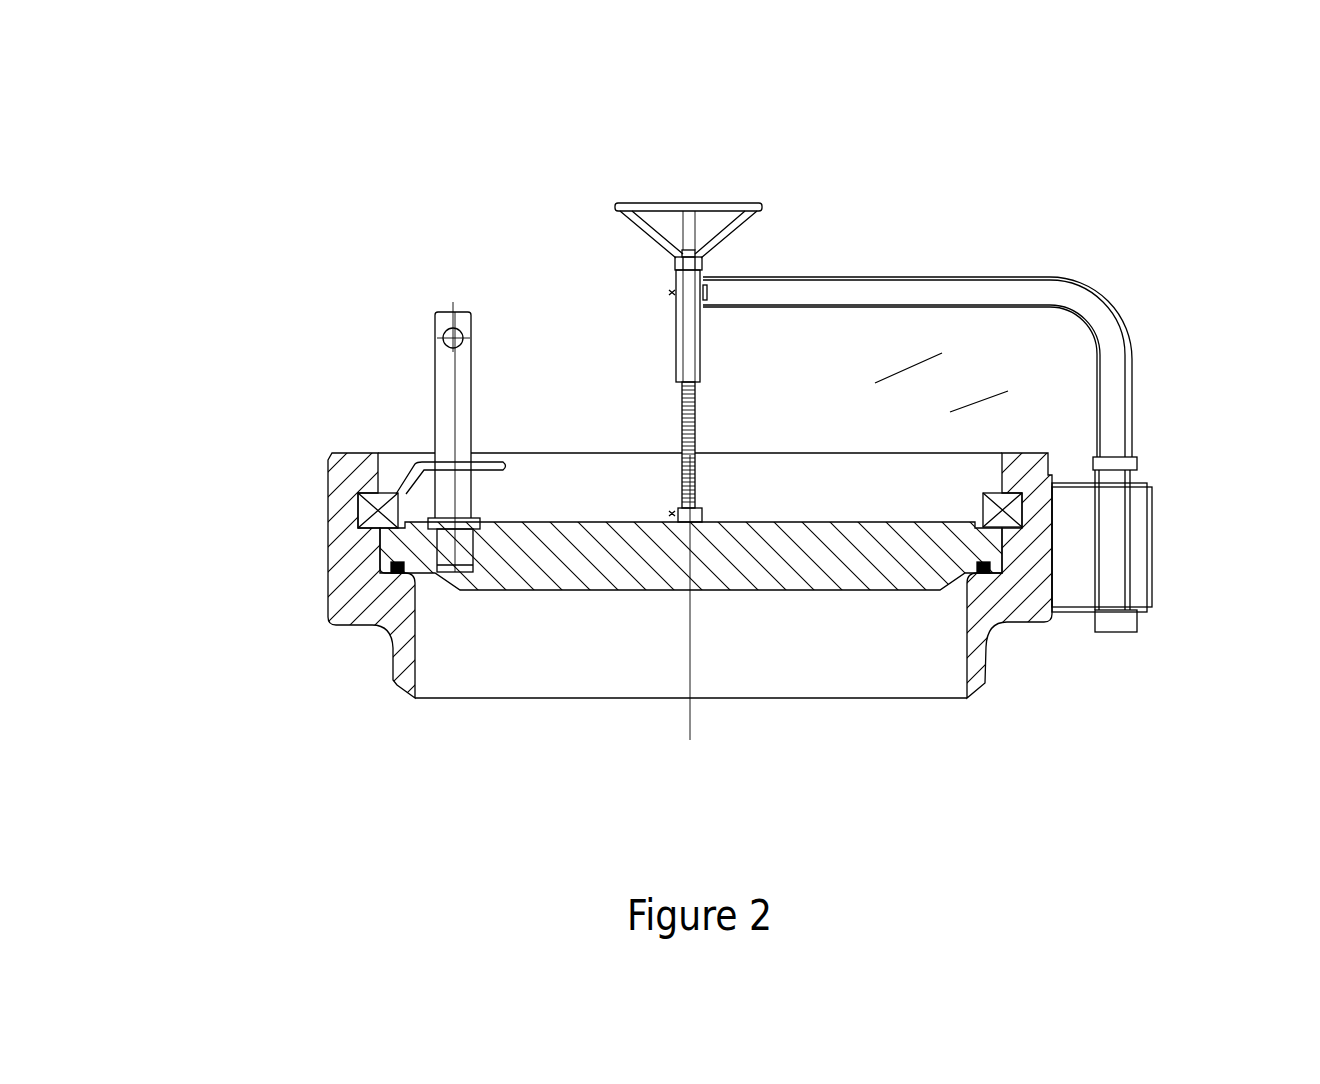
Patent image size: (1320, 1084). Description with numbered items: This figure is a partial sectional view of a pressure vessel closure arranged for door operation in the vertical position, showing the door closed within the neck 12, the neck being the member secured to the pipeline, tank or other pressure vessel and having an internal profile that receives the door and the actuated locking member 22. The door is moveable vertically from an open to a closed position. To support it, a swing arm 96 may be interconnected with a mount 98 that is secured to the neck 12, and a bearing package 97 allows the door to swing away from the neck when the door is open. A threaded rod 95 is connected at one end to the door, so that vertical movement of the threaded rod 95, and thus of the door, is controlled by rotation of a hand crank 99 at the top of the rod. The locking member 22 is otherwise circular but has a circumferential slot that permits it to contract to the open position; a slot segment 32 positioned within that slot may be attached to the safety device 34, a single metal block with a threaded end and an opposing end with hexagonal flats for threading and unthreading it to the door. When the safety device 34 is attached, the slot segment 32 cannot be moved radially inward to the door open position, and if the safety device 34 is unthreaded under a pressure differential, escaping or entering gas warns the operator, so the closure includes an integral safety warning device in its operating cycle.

The neck 12 is at (358, 606).
The locking member 22 is at (1003, 497).
The slot segment 32 is at (365, 500).
The safety device 34 is at (445, 395).
The threaded rod 95 is at (695, 452).
The swing arm 96 is at (910, 290).
The bearing package 97 is at (1112, 545).
The mount 98 is at (1073, 610).
The hand crank 99 is at (727, 235).